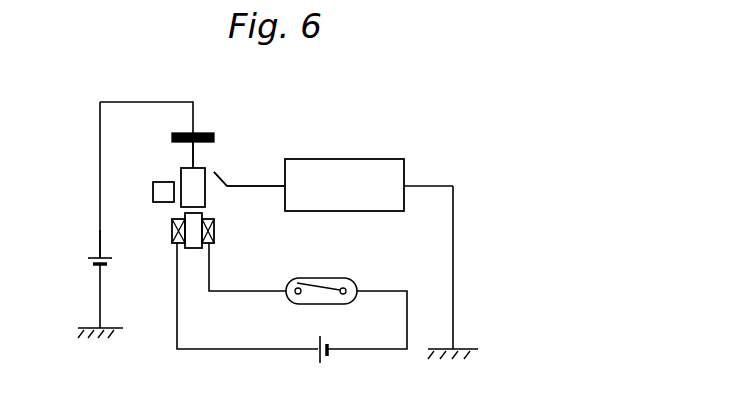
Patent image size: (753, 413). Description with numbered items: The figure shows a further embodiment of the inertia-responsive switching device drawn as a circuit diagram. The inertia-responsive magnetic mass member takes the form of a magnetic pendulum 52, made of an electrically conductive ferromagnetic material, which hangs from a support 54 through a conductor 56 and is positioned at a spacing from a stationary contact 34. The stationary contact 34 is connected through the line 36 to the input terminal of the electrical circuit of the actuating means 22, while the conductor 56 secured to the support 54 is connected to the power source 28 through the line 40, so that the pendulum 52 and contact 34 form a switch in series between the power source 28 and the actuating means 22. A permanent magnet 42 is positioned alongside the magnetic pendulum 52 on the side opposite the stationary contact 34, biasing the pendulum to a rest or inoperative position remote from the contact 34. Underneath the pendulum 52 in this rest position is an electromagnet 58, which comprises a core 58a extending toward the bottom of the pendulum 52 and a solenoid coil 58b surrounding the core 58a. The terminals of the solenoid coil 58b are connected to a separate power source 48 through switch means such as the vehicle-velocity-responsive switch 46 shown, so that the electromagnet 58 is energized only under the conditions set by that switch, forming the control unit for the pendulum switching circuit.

The actuating means 22 is at (331, 159).
The power source 28 is at (88, 261).
The stationary contact 34 is at (216, 172).
The line 36 is at (250, 187).
The line 40 is at (100, 232).
The permanent magnet 42 is at (153, 182).
The vehicle-velocity-responsive switch 46 is at (325, 278).
The power source 48 is at (322, 362).
The magnetic pendulum 52 is at (195, 190).
The support 54 is at (194, 131).
The conductor 56 is at (194, 152).
The electromagnet 58 is at (196, 268).
The core 58a is at (201, 248).
The solenoid coil 58b is at (176, 246).